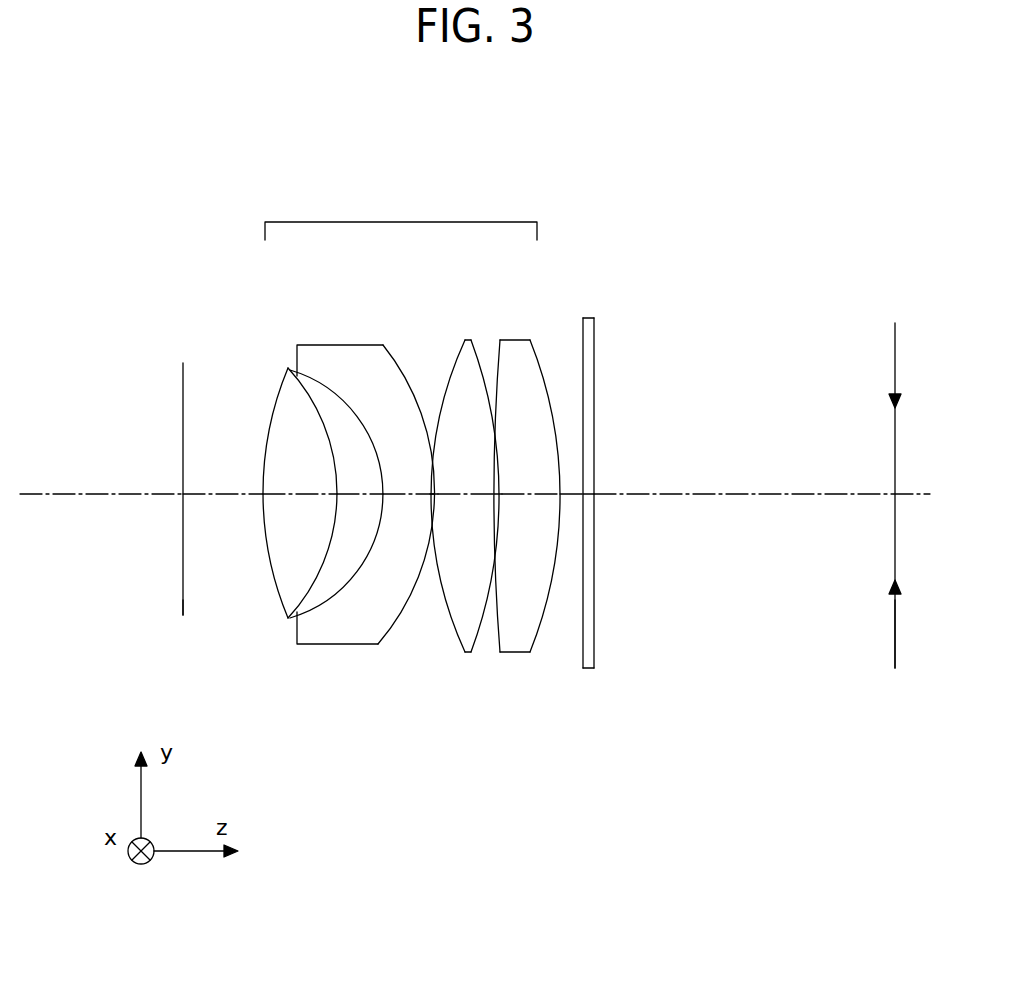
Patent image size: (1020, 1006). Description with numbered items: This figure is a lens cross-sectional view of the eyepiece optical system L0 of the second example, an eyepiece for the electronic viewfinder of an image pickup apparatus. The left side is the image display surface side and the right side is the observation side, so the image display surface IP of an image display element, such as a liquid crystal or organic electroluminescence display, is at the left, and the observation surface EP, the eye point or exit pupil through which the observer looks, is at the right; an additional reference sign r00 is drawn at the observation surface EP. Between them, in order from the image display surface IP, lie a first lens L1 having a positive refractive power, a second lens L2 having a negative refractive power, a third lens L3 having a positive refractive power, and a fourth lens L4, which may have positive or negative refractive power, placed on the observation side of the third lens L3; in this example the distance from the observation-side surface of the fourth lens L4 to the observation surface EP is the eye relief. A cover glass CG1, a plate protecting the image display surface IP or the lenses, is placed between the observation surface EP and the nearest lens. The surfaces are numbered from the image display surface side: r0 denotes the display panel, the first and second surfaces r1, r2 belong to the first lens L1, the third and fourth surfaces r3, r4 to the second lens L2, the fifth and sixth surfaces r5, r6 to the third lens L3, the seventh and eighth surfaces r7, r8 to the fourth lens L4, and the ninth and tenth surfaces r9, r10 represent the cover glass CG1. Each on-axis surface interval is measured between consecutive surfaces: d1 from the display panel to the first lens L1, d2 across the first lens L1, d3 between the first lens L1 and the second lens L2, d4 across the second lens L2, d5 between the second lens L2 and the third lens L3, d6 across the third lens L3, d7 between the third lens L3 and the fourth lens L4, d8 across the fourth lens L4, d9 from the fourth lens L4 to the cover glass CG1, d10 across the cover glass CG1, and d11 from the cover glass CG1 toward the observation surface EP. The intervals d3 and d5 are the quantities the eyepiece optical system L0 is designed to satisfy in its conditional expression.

The eyepiece optical system L0 is at (401, 215).
The first lens L1 is at (272, 488).
The second lens L2 is at (362, 500).
The third lens L3 is at (467, 509).
The fourth lens L4 is at (541, 496).
The cover glass CG1 is at (638, 494).
The image display surface IP is at (143, 471).
The observation surface EP is at (886, 500).
The display panel r0 is at (186, 633).
The first surface r1 is at (247, 517).
The second surface r2 is at (295, 526).
The third surface r3 is at (336, 551).
The fourth surface r4 is at (396, 538).
The fifth surface r5 is at (448, 544).
The sixth surface r6 is at (487, 545).
The seventh surface r7 is at (511, 532).
The eighth surface r8 is at (559, 530).
The ninth surface r9 is at (607, 532).
The tenth surface r10 is at (648, 531).
The exit pupil surface r00 is at (867, 638).
The on-axis surface interval d1 is at (223, 484).
The on-axis surface interval d2 is at (300, 484).
The on-axis surface interval d3 is at (365, 527).
The on-axis surface interval d4 is at (408, 484).
The on-axis surface interval d5 is at (453, 526).
The on-axis surface interval d6 is at (467, 484).
The on-axis surface interval d7 is at (527, 534).
The on-axis surface interval d8 is at (531, 484).
The on-axis surface interval d9 is at (597, 535).
The on-axis surface interval d10 is at (594, 484).
The on-axis surface interval d11 is at (762, 484).